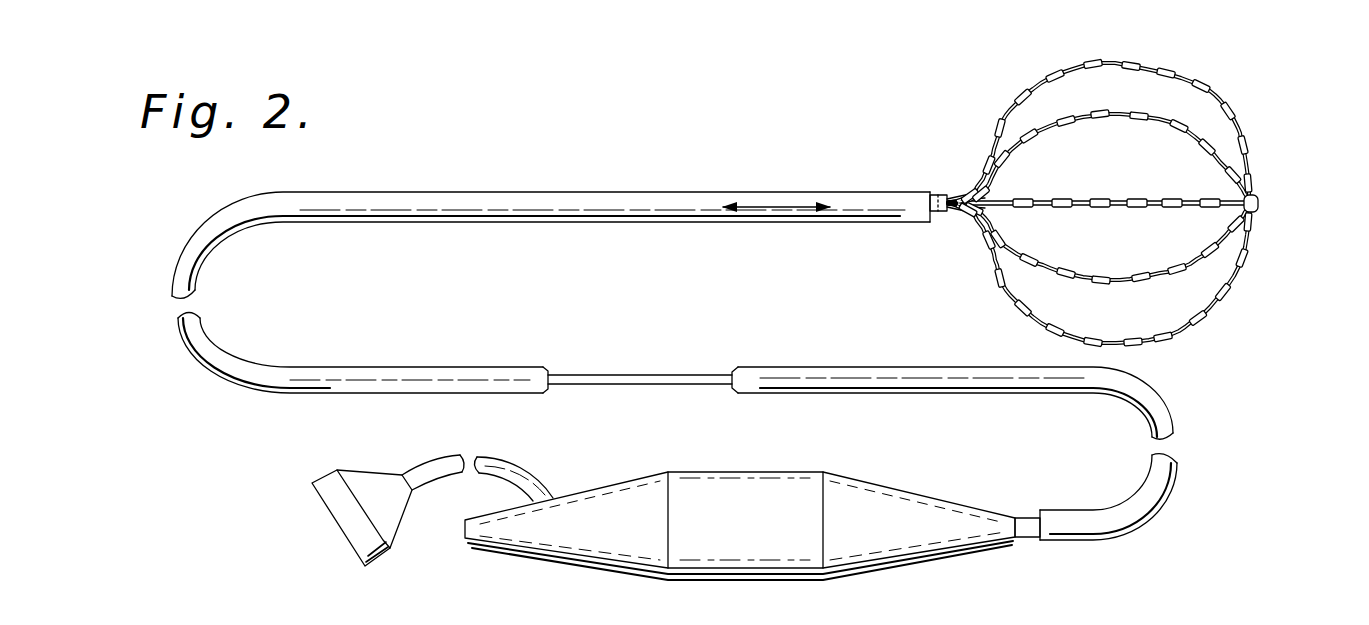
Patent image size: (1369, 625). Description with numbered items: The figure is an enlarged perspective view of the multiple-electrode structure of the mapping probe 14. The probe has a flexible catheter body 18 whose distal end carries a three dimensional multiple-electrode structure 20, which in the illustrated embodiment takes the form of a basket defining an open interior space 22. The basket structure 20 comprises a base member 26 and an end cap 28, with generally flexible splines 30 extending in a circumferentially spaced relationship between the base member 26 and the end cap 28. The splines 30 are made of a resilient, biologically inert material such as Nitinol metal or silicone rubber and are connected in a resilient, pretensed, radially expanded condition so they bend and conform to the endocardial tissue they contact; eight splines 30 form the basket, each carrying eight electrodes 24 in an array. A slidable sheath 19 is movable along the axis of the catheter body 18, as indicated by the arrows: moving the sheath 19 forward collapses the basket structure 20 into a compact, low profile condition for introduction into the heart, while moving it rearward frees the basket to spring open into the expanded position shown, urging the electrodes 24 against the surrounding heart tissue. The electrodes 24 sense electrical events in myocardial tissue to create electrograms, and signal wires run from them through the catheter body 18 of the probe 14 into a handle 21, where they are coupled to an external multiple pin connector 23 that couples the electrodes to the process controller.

The mapping probe 14 is at (571, 176).
The catheter body 18 is at (943, 193).
The slidable sheath 19 is at (777, 197).
The multiple-electrode structure 20 is at (1256, 160).
The handle 21 is at (819, 518).
The open interior space 22 is at (1089, 225).
The external multiple pin connector 23 is at (332, 498).
The electrodes 24 is at (1197, 90).
The base member 26 is at (966, 216).
The end cap 28 is at (1258, 203).
The splines 30 is at (1020, 104).